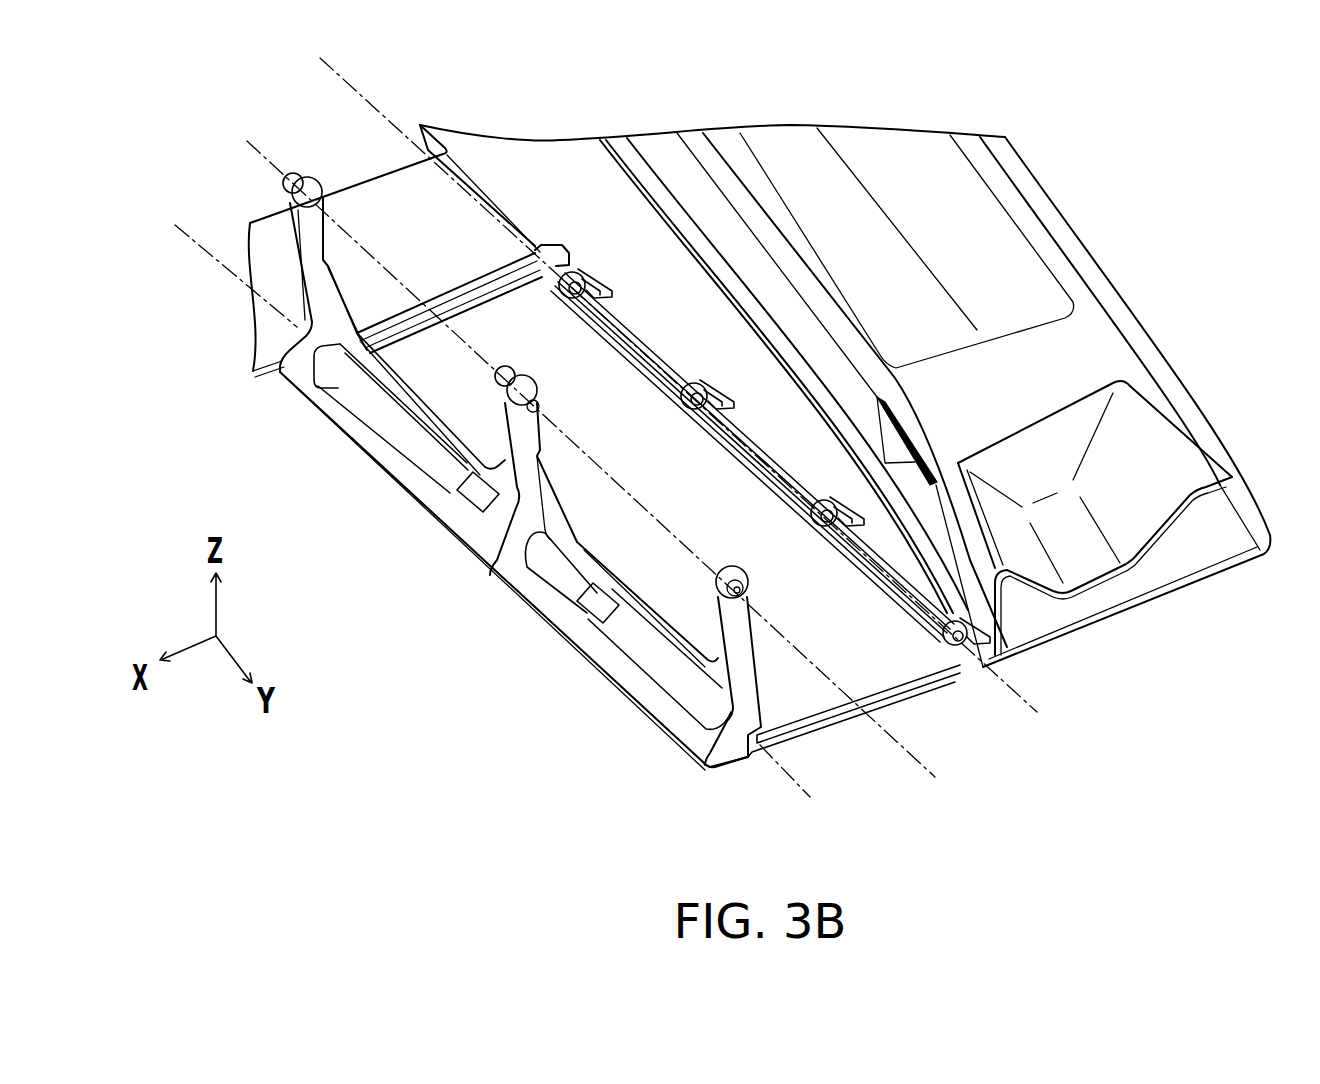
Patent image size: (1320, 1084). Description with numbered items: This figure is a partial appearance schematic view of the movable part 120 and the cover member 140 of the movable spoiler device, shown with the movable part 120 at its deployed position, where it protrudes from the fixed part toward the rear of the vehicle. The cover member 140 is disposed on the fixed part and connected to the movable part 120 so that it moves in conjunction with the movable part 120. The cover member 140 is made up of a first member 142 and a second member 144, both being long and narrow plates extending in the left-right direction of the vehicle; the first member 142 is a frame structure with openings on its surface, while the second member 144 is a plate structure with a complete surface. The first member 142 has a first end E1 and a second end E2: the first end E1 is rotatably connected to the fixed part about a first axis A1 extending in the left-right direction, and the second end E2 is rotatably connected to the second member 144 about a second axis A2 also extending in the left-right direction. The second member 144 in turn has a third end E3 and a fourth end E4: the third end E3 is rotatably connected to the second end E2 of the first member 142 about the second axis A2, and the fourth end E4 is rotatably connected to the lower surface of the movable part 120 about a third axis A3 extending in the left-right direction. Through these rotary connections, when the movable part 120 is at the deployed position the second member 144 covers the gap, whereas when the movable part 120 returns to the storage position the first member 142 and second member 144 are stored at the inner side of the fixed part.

The movable part 120 is at (1183, 557).
The cover member 140 is at (576, 471).
The first member 142 is at (553, 602).
The second member 144 is at (575, 488).
The first axis A1 is at (602, 468).
The second axis A2 is at (801, 796).
The third axis A3 is at (625, 409).
The first end E1 is at (727, 620).
The second end E2 is at (718, 768).
The third end E3 is at (769, 720).
The fourth end E4 is at (941, 657).